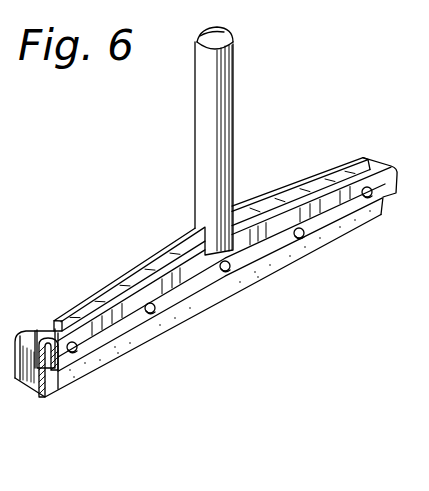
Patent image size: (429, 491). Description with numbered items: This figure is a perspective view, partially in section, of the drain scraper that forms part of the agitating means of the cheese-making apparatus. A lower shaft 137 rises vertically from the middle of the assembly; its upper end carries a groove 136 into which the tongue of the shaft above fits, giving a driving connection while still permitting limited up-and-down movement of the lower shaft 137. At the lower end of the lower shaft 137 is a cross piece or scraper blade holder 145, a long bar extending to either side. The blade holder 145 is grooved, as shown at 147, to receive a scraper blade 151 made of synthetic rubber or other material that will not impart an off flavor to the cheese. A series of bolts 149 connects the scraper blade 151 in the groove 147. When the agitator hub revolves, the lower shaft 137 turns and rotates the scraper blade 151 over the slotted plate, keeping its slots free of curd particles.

The groove 136 is at (236, 50).
The lower shaft 137 is at (210, 142).
The scraper blade holder 145 is at (253, 258).
The groove 147 is at (34, 398).
The bolts 149 is at (150, 313).
The scraper blade 151 is at (333, 238).